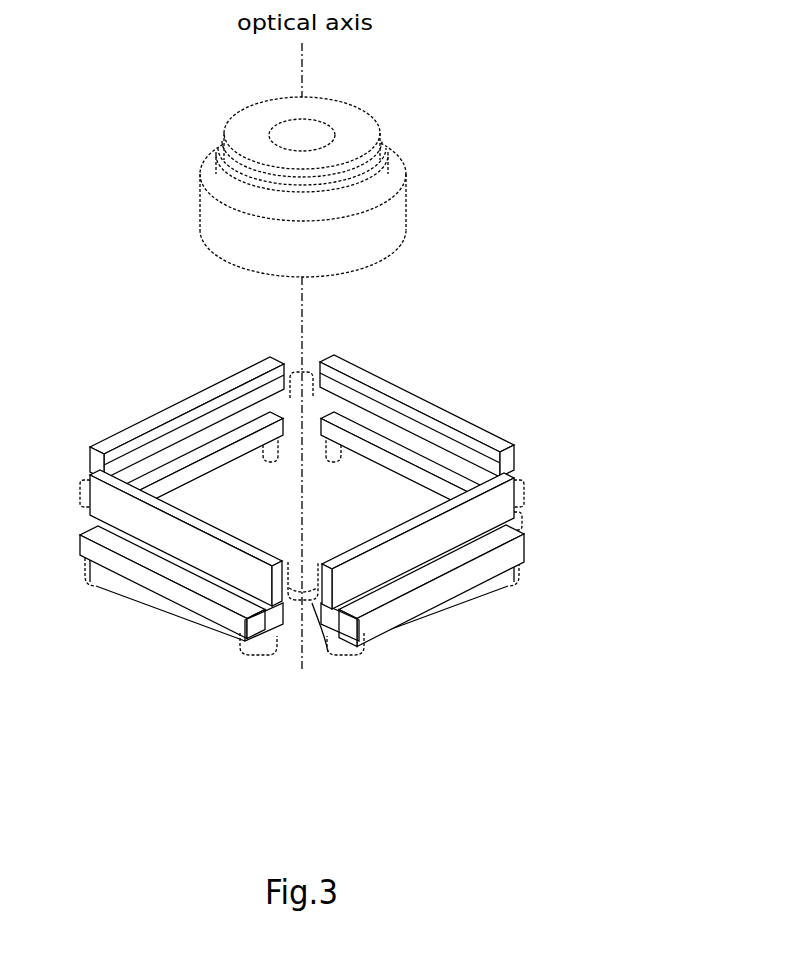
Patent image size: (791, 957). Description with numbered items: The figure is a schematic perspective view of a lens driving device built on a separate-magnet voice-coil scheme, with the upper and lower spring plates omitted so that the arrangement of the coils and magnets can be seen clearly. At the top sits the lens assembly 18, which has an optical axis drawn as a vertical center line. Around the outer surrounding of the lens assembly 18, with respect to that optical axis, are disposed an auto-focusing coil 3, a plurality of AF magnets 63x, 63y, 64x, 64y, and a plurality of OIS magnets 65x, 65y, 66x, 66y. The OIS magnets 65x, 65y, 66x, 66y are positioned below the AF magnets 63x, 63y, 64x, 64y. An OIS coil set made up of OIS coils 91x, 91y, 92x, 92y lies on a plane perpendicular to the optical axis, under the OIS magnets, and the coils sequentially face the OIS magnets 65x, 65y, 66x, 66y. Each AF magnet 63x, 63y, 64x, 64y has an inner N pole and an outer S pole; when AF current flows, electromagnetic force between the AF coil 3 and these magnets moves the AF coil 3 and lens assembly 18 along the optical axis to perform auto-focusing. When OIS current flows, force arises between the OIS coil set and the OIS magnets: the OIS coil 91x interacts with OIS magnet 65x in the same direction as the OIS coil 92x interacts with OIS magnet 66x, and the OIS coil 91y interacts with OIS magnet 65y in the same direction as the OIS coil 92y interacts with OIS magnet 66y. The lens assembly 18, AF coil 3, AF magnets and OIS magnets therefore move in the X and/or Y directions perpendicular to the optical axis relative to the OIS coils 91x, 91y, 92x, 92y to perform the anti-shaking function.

The auto-focusing coil 3 is at (292, 372).
The lens assembly 18 is at (398, 214).
The AF magnet 63x is at (503, 494).
The AF magnet 63y is at (291, 602).
The AF magnet 64x is at (184, 407).
The AF magnet 64y is at (427, 410).
The OIS magnet 65x is at (512, 550).
The OIS magnet 65y is at (241, 627).
The OIS magnet 66x is at (241, 447).
The OIS magnet 66y is at (408, 468).
The OIS coil 91x is at (440, 610).
The OIS coil 91y is at (153, 607).
The OIS coil 92x is at (203, 487).
The OIS coil 92y is at (403, 497).